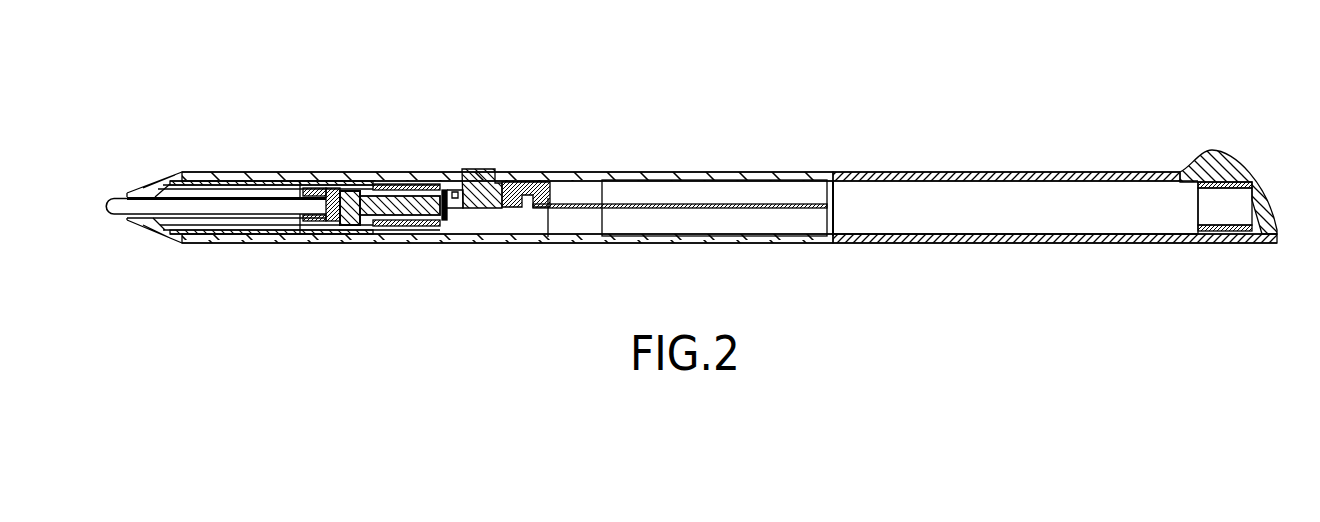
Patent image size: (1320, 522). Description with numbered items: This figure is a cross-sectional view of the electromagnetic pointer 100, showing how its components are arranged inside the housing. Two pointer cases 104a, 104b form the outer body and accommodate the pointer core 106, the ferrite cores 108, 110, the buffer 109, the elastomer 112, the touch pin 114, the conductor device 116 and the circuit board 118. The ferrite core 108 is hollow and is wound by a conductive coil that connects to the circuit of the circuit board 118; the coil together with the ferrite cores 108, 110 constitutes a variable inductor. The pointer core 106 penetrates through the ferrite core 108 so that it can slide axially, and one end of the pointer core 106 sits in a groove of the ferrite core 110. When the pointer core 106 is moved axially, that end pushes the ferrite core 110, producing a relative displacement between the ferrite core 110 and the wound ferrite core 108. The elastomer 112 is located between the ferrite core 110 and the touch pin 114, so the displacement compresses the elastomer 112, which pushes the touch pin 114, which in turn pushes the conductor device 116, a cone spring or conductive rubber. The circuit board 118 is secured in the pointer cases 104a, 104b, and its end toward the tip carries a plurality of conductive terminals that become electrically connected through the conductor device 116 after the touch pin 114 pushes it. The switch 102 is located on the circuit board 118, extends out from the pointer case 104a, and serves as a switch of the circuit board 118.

The electromagnetic pointer 100 is at (97, 67).
The switch 102 is at (483, 178).
The pointer case 104a is at (580, 180).
The pointer case 104b is at (1015, 178).
The pointer core 106 is at (208, 208).
The ferrite core 108 is at (215, 193).
The buffer 109 is at (303, 193).
The ferrite core 110 is at (300, 217).
The elastomer 112 is at (352, 200).
The touch pin 114 is at (383, 210).
The conductor device 116 is at (445, 190).
The circuit board 118 is at (762, 204).